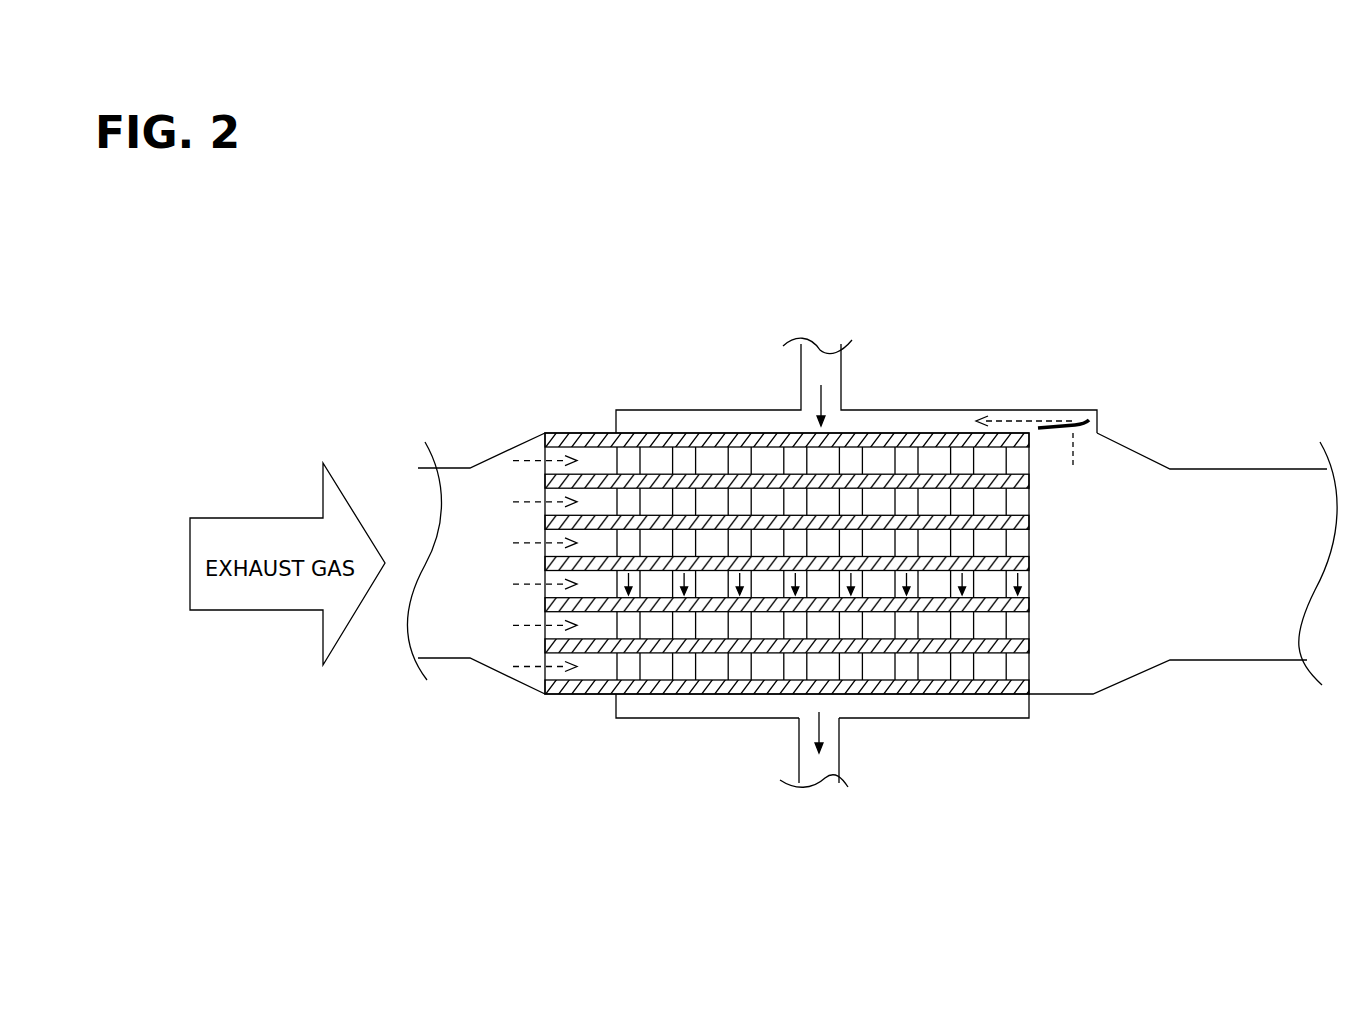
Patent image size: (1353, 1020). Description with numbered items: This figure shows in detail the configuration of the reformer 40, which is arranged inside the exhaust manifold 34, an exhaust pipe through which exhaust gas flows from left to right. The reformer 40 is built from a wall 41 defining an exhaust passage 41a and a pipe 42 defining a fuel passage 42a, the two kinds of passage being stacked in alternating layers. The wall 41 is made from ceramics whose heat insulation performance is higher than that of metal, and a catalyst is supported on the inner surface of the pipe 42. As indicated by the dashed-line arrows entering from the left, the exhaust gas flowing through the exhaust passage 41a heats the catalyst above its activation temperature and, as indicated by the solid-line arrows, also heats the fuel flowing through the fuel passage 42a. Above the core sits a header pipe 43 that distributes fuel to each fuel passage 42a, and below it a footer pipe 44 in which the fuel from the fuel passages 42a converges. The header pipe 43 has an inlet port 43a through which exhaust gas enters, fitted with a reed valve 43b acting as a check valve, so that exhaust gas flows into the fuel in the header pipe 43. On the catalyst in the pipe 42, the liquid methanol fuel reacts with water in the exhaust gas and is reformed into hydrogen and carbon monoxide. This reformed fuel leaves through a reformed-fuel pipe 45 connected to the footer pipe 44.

The exhaust manifold 34 is at (1233, 469).
The reformer 40 is at (518, 353).
The wall 41 is at (718, 441).
The exhaust passage 41a is at (658, 463).
The pipe 42 is at (930, 458).
The fuel passage 42a is at (903, 460).
The header pipe 43 is at (762, 410).
The inlet port 43a is at (1082, 437).
The reed valve 43b is at (1083, 423).
The footer pipe 44 is at (948, 718).
The reformed-fuel pipe 45 is at (799, 752).